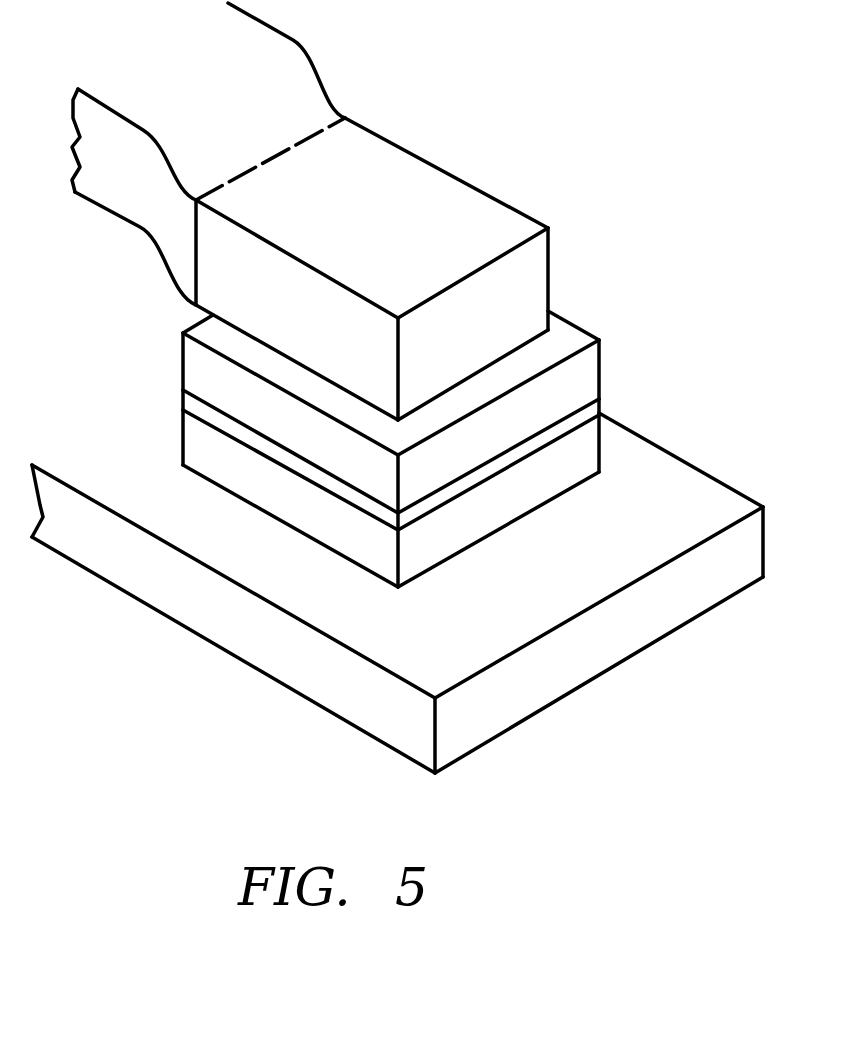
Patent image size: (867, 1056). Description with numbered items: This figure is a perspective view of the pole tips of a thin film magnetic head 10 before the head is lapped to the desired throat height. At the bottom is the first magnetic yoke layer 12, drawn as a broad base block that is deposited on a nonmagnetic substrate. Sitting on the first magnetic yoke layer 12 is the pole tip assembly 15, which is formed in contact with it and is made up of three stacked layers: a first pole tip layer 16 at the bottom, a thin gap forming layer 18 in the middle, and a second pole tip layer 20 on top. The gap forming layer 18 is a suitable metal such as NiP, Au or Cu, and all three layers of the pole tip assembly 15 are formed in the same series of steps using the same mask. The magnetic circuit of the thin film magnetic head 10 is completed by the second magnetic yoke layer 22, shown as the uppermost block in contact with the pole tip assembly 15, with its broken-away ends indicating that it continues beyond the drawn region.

The thin film magnetic head 10 is at (397, 412).
The first magnetic yoke layer 12 is at (620, 682).
The pole tip assembly 15 is at (618, 396).
The first pole tip layer 16 is at (590, 453).
The gap forming layer 18 is at (417, 517).
The second pole tip layer 20 is at (563, 335).
The second magnetic yoke layer 22 is at (428, 175).